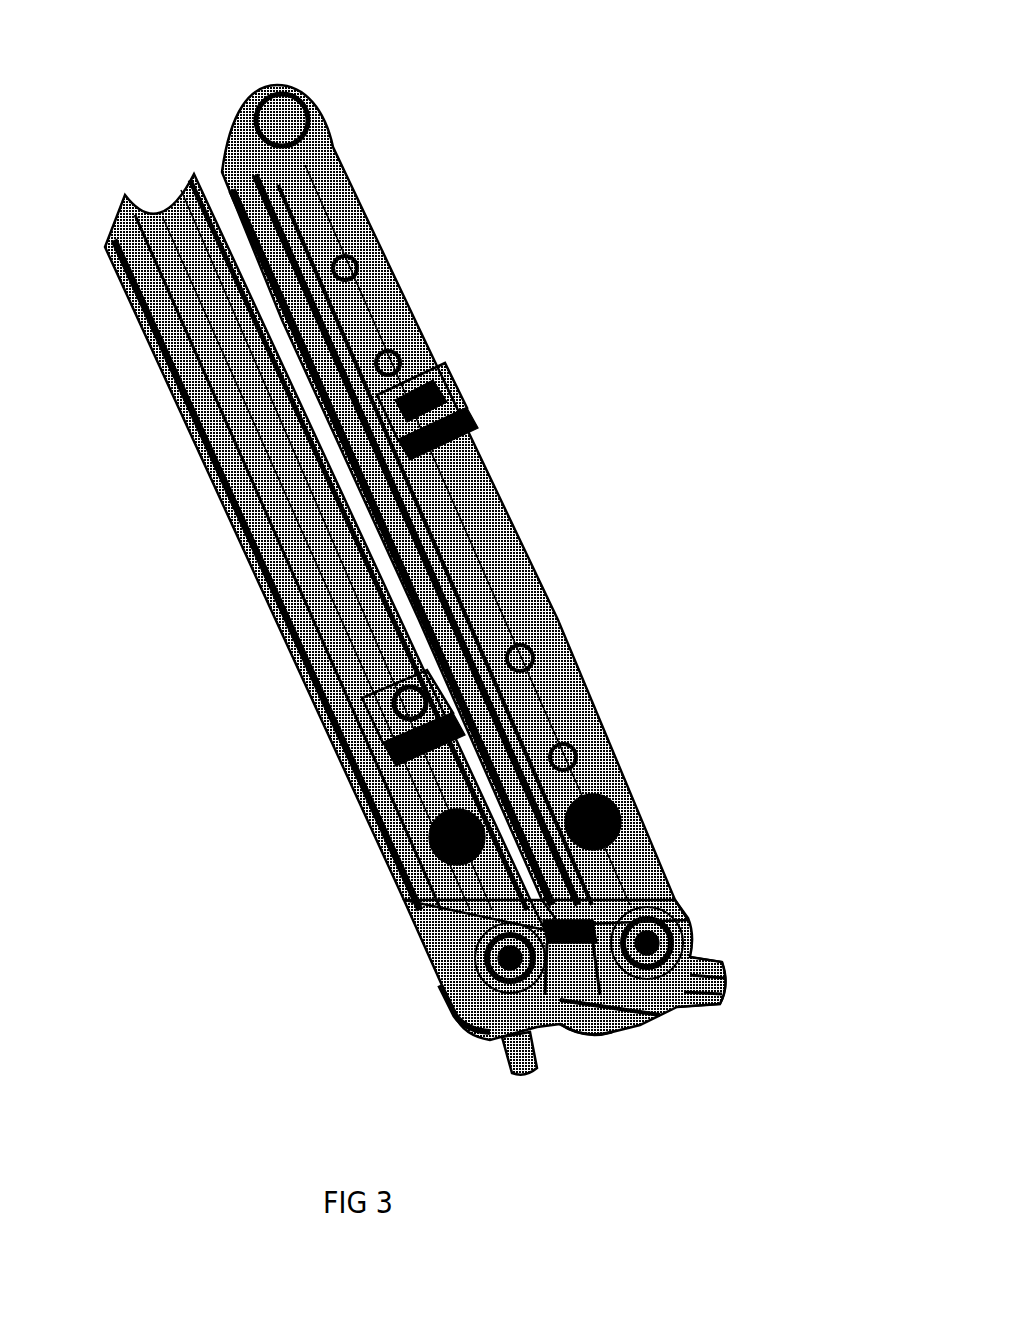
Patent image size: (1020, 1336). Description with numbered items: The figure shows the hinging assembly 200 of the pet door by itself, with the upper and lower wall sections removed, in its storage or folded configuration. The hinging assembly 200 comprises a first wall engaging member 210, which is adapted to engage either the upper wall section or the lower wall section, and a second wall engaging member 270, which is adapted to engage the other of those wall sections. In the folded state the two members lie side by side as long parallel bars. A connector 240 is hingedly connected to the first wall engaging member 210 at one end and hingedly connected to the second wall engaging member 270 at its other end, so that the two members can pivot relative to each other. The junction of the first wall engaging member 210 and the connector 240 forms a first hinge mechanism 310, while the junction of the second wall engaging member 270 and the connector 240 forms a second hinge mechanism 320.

The hinging assembly 200 is at (508, 103).
The first wall engaging member 210 is at (510, 425).
The second wall engaging member 270 is at (240, 620).
The first hinge mechanism 310 is at (694, 921).
The second hinge mechanism 320 is at (463, 1043).
The connector 240 is at (601, 1055).